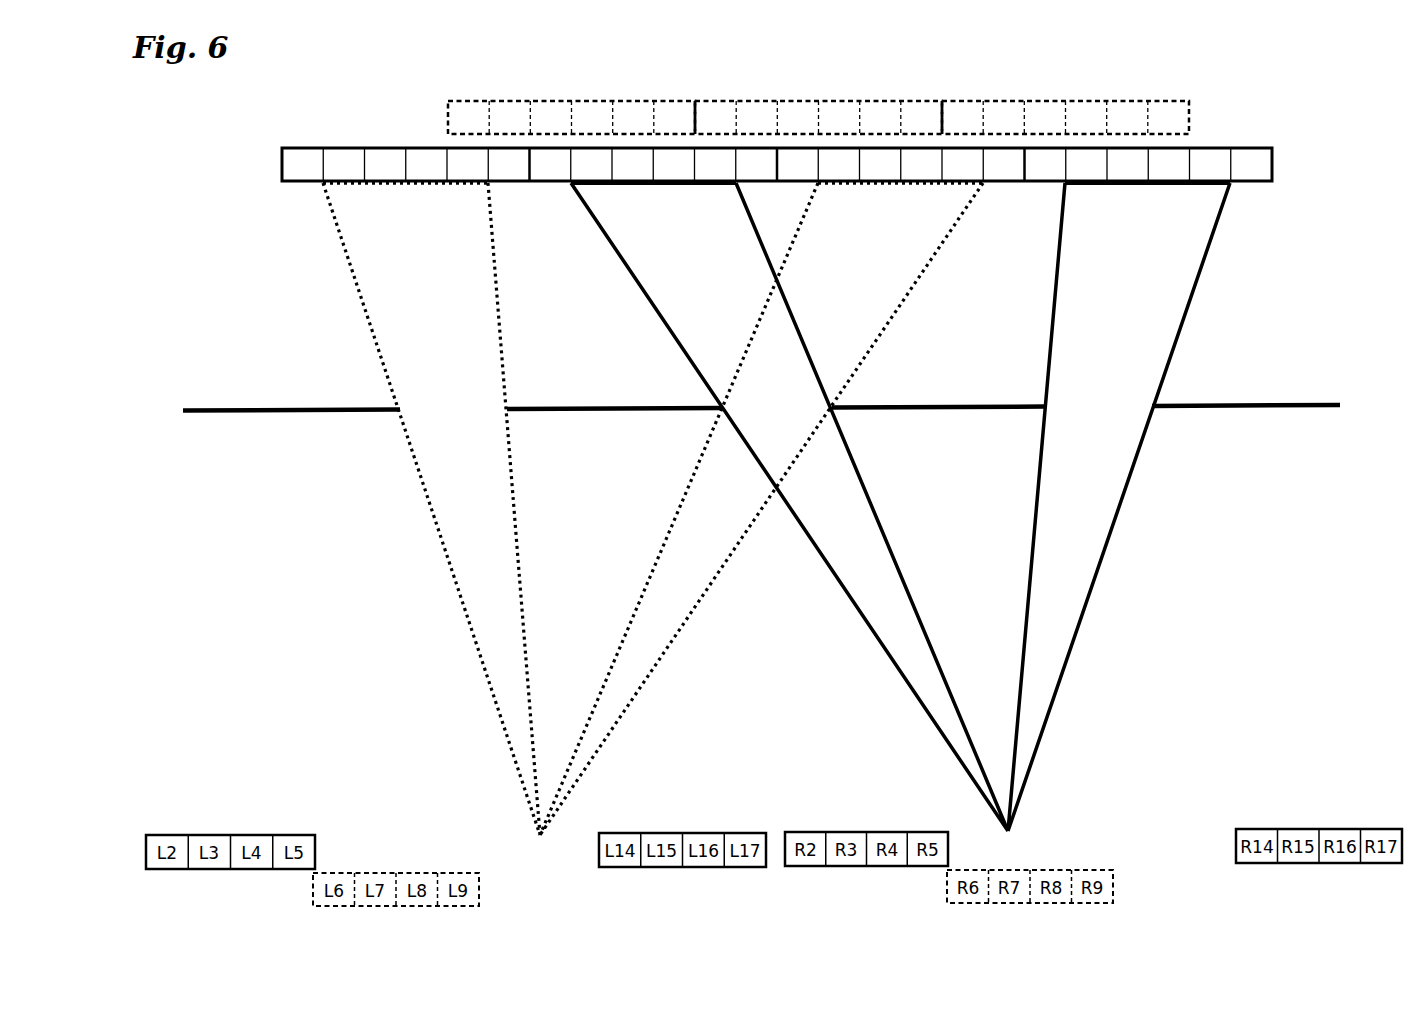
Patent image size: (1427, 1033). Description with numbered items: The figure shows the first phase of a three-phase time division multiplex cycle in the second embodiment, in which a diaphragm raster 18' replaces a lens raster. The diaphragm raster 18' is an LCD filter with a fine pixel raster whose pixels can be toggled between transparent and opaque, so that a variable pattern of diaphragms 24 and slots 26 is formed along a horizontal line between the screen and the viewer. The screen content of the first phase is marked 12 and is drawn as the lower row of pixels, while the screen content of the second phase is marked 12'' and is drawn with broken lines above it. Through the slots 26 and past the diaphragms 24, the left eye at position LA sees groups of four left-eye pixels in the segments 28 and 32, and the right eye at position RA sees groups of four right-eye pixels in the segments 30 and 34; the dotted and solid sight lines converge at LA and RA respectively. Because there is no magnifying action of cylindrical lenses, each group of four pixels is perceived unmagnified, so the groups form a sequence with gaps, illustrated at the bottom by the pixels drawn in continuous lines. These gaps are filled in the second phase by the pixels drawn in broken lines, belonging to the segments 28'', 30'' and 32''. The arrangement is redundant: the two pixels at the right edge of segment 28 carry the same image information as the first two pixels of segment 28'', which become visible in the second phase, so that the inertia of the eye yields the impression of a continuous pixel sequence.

The screen content 12 is at (741, 176).
The screen content 12'' is at (769, 84).
The segment 28 is at (409, 509).
The segment 30 is at (767, 507).
The segment 32 is at (761, 509).
The segment 34 is at (1052, 183).
The segment 28'' is at (571, 82).
The segment 30'' is at (818, 82).
The segment 32'' is at (1065, 82).
The diaphragm raster 18' is at (761, 445).
The diaphragm 24 is at (630, 412).
The slot 26 is at (438, 407).
The left eye viewing position LA is at (578, 818).
The right eye viewing position RA is at (1049, 814).